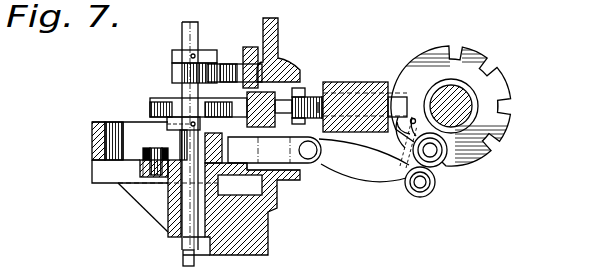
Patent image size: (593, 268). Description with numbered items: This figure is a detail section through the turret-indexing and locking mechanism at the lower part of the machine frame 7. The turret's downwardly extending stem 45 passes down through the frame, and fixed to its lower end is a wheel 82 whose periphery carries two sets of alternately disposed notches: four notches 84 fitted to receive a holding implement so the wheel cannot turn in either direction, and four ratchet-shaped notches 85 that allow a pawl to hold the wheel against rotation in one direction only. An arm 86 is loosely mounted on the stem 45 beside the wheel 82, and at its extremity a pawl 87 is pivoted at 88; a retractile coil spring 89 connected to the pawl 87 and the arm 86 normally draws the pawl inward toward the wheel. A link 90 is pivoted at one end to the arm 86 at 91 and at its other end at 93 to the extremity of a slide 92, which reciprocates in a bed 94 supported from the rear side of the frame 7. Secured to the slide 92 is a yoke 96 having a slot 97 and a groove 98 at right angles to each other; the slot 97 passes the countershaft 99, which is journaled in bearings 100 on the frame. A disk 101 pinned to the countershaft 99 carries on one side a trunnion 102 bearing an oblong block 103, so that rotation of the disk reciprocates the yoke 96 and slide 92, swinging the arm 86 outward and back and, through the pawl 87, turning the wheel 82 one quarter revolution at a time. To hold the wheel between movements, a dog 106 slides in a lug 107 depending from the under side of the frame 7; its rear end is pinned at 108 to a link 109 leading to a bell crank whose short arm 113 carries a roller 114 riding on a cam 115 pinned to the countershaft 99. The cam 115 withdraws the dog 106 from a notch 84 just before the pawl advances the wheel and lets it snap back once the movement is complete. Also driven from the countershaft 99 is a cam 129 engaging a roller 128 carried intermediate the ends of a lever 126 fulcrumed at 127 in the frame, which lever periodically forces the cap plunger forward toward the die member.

The machine frame 7 is at (263, 229).
The stem 45 is at (457, 97).
The wheel 82 is at (494, 78).
The notches 84 is at (494, 107).
The notches 85 is at (490, 150).
The arm 86 is at (436, 176).
The pawl 87 is at (407, 172).
The pivot 88 is at (422, 185).
The retractile coil spring 89 is at (398, 132).
The link 90 is at (364, 160).
The pivot 91 is at (443, 165).
The slide 92 is at (274, 150).
The pivot 93 is at (305, 160).
The bed 94 is at (100, 163).
The yoke 96 is at (100, 145).
The slot 97 is at (90, 123).
The groove 98 is at (154, 155).
The countershaft 99 is at (191, 35).
The bearings 100 is at (167, 223).
The disk 101 is at (248, 166).
The trunnion 102 is at (157, 171).
The oblong block 103 is at (143, 157).
The dog 106 is at (398, 78).
The lug 107 is at (360, 88).
The pin 108 is at (304, 94).
The link 109 is at (308, 104).
The short arm 113 is at (182, 72).
The roller 114 is at (212, 98).
The cam 115 is at (205, 109).
The lever 126 is at (264, 76).
The fulcrum 127 is at (252, 50).
The roller 128 is at (224, 69).
The cam 129 is at (183, 63).